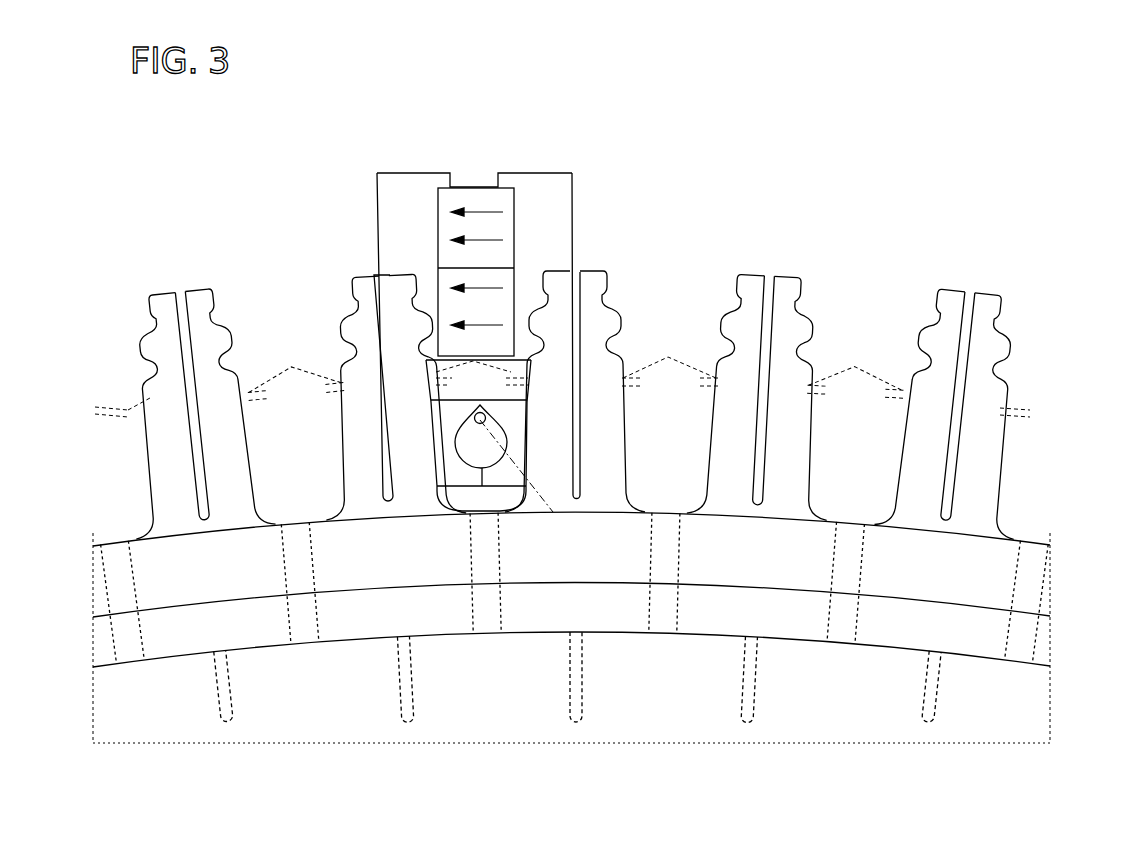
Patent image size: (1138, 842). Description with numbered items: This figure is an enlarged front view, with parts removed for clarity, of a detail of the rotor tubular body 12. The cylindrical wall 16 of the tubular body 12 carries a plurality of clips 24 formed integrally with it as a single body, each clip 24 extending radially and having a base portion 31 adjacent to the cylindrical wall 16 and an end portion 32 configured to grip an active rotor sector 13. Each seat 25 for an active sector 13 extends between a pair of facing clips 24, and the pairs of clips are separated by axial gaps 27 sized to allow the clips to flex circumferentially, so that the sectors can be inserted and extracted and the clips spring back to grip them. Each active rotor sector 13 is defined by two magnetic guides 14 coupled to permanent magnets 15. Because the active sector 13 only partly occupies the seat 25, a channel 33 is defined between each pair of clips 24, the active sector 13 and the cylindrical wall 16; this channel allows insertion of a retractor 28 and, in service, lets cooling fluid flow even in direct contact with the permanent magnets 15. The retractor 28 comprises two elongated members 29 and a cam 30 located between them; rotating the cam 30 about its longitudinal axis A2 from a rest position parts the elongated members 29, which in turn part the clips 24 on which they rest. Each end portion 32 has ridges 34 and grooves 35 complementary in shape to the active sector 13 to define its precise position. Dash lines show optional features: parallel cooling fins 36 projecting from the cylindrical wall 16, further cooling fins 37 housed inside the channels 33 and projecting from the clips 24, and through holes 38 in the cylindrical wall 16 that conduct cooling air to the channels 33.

The tubular body 12 is at (590, 421).
The active rotor sector 13 is at (519, 371).
The magnetic guide 14 is at (413, 170).
The permanent magnet 15 is at (494, 272).
The cylindrical wall 16 is at (1047, 588).
The clip 24 is at (162, 466).
The seat 25 is at (247, 266).
The axial gap 27 is at (178, 287).
The retractor 28 is at (494, 506).
The elongated member 29 is at (480, 486).
The cam 30 is at (483, 425).
The base portion 31 is at (196, 516).
The end portion 32 is at (150, 352).
The channel 33 is at (531, 392).
The ridge 34 is at (1006, 360).
The groove 35 is at (1006, 305).
The cooling fin 36 is at (216, 690).
The further cooling fin 37 is at (118, 405).
The through hole 38 is at (125, 597).
The longitudinal axis A2 is at (518, 485).